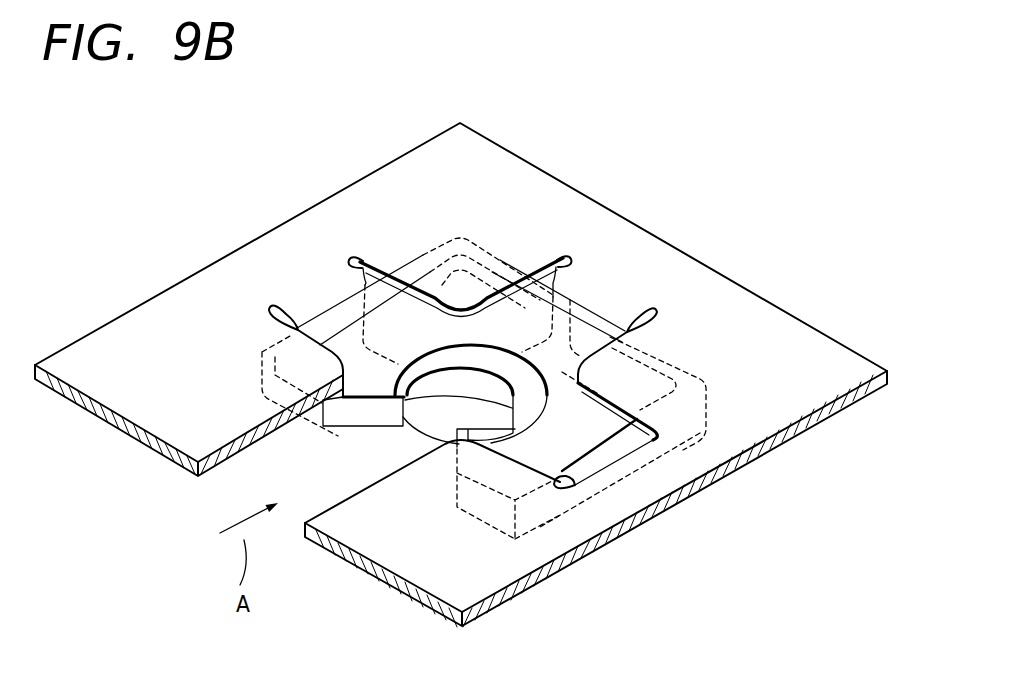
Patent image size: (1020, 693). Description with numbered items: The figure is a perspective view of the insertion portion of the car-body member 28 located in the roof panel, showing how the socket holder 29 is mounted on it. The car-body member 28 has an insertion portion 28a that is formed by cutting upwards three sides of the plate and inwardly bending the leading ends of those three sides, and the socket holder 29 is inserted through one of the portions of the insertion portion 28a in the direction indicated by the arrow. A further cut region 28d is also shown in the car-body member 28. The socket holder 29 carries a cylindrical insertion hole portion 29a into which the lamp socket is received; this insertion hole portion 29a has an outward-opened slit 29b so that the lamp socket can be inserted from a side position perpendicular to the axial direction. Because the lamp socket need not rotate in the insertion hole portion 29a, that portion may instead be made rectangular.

The car-body member 28 is at (706, 305).
The insertion portion 28a is at (584, 340).
The slot 28d is at (603, 540).
The socket holder 29 is at (570, 437).
The insertion hole portion 29a is at (462, 372).
The slit 29b is at (404, 440).